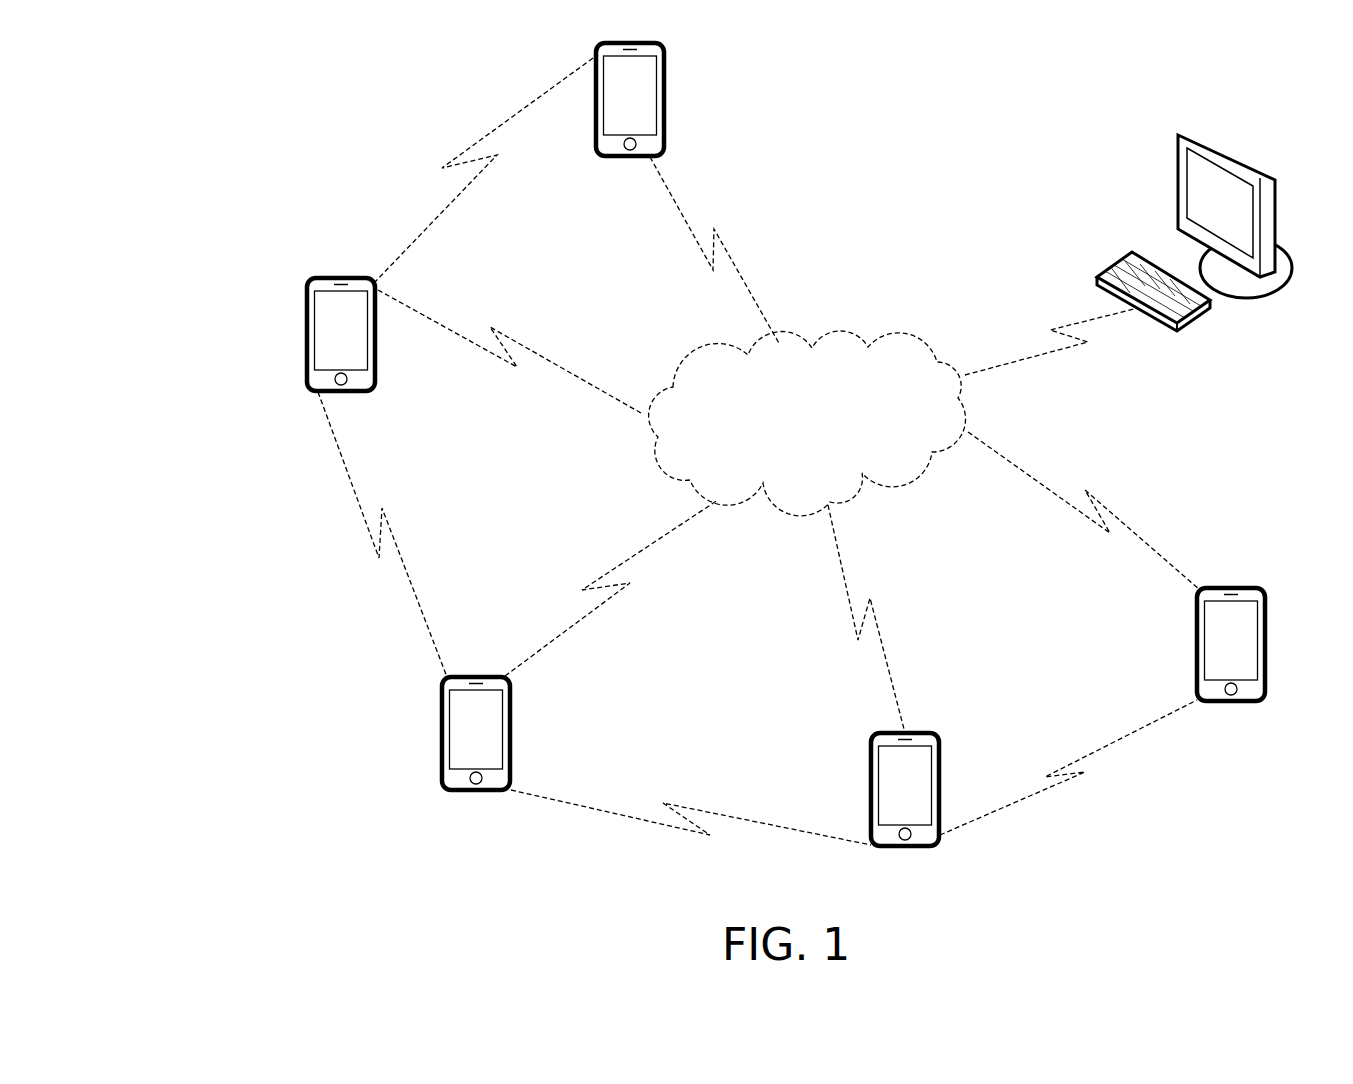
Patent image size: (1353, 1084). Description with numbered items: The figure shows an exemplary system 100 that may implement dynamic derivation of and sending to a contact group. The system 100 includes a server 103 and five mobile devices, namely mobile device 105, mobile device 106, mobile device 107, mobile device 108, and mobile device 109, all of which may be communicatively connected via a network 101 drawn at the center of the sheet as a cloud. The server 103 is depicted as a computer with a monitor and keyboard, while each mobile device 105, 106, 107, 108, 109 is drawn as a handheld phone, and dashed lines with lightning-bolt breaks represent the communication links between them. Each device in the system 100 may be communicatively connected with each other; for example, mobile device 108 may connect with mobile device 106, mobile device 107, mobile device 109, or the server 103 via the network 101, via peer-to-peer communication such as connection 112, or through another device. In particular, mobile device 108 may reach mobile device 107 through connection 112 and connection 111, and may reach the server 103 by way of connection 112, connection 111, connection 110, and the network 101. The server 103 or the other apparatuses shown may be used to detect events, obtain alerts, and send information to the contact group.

The system 100 is at (256, 86).
The network 101 is at (807, 423).
The server 103 is at (1262, 296).
The mobile device 105 is at (607, 160).
The mobile device 106 is at (337, 393).
The mobile device 107 is at (475, 791).
The mobile device 108 is at (902, 848).
The mobile device 109 is at (1228, 702).
The connection 110 is at (517, 368).
The connection 111 is at (374, 530).
The connection 112 is at (771, 826).